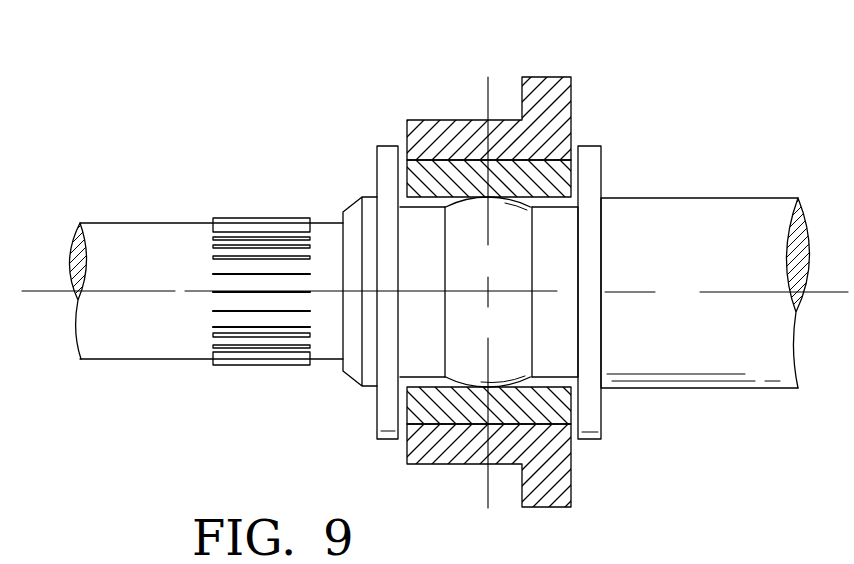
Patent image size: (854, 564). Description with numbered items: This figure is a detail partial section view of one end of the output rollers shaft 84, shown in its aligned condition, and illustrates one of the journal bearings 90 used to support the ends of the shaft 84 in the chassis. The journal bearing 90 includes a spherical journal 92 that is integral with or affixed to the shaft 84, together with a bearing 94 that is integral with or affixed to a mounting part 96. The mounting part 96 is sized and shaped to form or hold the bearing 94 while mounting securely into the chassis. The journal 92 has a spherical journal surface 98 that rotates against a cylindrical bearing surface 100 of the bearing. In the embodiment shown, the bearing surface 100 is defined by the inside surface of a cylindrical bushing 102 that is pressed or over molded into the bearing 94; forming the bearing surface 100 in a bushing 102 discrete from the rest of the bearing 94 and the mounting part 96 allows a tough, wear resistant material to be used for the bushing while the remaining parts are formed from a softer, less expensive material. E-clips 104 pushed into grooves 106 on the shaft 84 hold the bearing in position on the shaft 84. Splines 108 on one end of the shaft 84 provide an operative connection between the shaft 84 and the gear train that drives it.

The output rollers shaft 84 is at (716, 208).
The journal bearing 90 is at (325, 85).
The spherical journal 92 is at (512, 255).
The bearing 94 is at (555, 102).
The mounting part 96 is at (605, 77).
The spherical journal surface 98 is at (497, 333).
The cylindrical bearing surface 100 is at (548, 201).
The cylindrical bushing 102 is at (547, 177).
The E-clip 104 is at (383, 163).
The groove 106 is at (397, 380).
The splines 108 is at (248, 365).